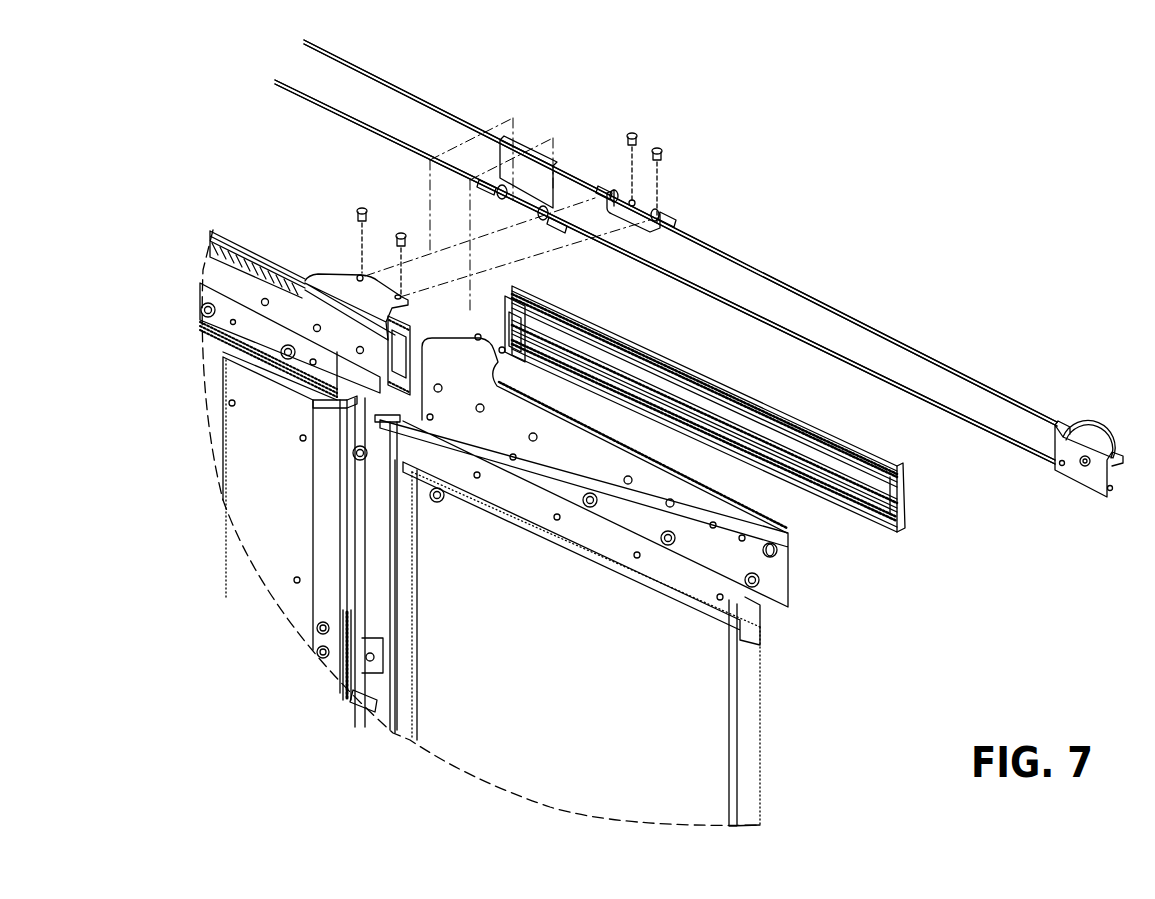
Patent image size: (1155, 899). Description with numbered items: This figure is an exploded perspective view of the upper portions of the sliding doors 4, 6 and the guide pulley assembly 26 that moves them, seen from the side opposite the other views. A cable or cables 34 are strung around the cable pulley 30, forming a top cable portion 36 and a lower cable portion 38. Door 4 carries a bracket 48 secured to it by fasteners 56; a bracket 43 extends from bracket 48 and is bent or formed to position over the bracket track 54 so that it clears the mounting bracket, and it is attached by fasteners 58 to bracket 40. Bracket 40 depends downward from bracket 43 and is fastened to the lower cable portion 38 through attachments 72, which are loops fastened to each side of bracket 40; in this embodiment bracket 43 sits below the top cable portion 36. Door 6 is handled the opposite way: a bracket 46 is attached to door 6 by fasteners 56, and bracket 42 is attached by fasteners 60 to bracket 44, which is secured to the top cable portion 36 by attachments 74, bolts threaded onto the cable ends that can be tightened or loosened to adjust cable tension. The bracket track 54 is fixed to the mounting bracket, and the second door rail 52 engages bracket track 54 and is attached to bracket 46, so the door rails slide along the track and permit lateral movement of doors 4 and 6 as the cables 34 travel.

The door 4 is at (247, 488).
The door 6 is at (547, 684).
The guide pulley assembly 26 is at (728, 120).
The cable pulley 30 is at (1088, 435).
The cable 34 is at (357, 66).
The top cable portion 36 is at (444, 100).
The lower cable portion 38 is at (348, 120).
The bracket 40 is at (535, 188).
The bracket 42 is at (487, 355).
The bracket 43 is at (357, 290).
The bracket 44 is at (637, 206).
The bracket 46 is at (768, 574).
The bracket 48 is at (237, 280).
The second door rail 52 is at (792, 546).
The bracket track 54 is at (268, 280).
The fastener 56 is at (208, 318).
The fastener 58 is at (370, 210).
The fastener 60 is at (634, 133).
The attachment 72 is at (487, 190).
The attachment 74 is at (606, 180).